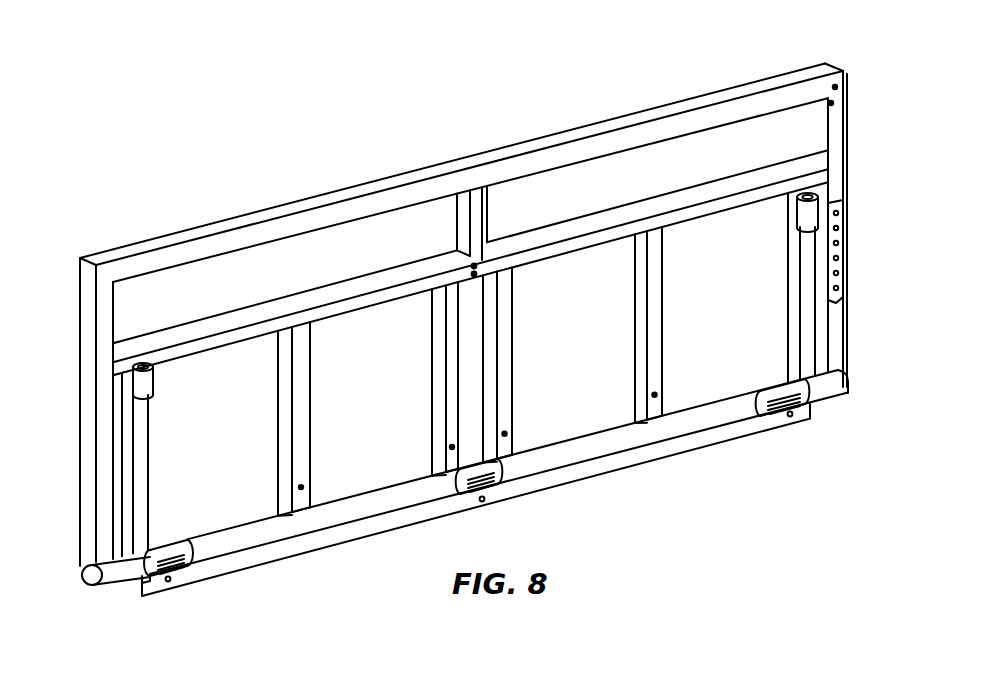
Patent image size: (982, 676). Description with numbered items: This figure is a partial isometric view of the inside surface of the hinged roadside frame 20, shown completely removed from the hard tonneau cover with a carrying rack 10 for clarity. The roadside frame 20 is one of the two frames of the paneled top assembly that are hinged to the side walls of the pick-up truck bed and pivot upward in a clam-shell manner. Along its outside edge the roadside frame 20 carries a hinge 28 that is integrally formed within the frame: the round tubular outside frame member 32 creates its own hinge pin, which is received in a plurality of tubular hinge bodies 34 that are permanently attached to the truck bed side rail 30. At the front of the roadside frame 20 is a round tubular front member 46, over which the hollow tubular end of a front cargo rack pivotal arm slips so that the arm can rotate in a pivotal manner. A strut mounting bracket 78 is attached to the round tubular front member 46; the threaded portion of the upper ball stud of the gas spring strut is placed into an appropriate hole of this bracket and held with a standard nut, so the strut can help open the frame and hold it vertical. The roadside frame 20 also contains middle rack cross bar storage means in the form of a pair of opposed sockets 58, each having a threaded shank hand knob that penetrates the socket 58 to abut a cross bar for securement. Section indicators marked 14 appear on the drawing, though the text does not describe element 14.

The hard tonneau cover with a carrying rack 10 is at (63, 243).
The section line 14 is at (802, 265).
The roadside frame 20 is at (423, 168).
The hinge 28 is at (185, 565).
The truck bed side rail 30 is at (727, 440).
The round tubular outside frame member 32 is at (418, 505).
The tubular hinge body 34 is at (507, 480).
The round tubular front member 46 is at (845, 100).
The socket 58 is at (133, 373).
The strut mounting bracket 78 is at (846, 246).